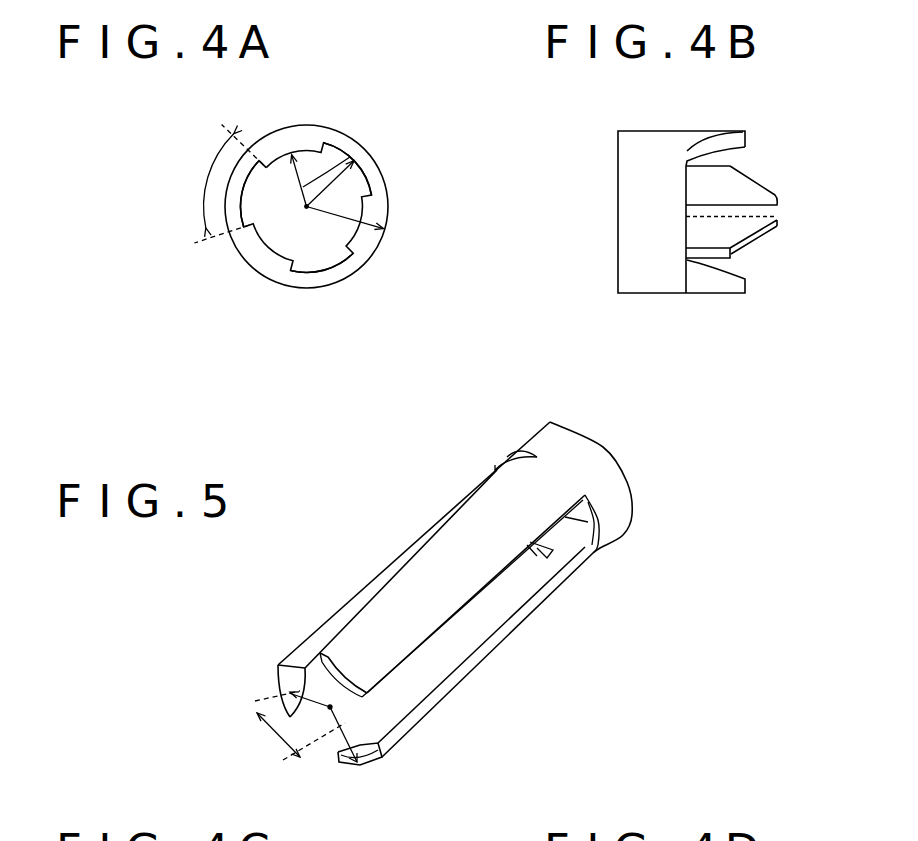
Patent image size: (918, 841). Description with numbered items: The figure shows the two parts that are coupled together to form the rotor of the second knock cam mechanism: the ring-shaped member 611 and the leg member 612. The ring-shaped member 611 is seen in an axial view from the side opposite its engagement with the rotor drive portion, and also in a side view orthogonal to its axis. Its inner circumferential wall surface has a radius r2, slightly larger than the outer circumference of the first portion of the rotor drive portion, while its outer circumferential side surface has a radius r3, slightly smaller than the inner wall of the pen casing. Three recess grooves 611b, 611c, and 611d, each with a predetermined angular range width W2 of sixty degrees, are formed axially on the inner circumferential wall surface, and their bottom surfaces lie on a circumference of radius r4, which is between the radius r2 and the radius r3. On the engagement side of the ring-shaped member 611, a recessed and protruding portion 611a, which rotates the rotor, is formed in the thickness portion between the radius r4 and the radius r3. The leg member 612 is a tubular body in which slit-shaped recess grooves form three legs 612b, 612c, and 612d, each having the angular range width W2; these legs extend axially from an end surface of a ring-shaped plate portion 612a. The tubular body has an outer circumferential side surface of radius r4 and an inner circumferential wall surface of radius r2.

In FIG. 4A, the ring-shaped member 611 is at (257, 257).
In FIG. 4B, the ring-shaped member 611 is at (657, 138).
In FIG. 4B, the recessed and protruding portion 611a is at (752, 243).
In FIG. 4A, the recess groove 611b is at (358, 168).
In FIG. 4A, the recess groove 611c is at (247, 205).
In FIG. 4A, the recess groove 611d is at (313, 267).
In FIG. 5, the leg member 612 is at (467, 617).
In FIG. 5, the ring-shaped plate portion 612a is at (613, 518).
In FIG. 5, the leg 612b is at (393, 603).
In FIG. 5, the leg 612c is at (277, 679).
In FIG. 5, the leg 612d is at (368, 757).
In FIG. 4A, the radius of inner circumferential wall surface r2 is at (330, 155).
In FIG. 5, the radius of inner circumferential wall surface r2 is at (295, 687).
In FIG. 4A, the radius of outer circumferential side surface r3 is at (343, 218).
In FIG. 4A, the radius of recess groove bottom surfaces r4 is at (365, 205).
In FIG. 5, the radius of recess groove bottom surfaces r4 is at (340, 745).
In FIG. 4A, the angular range width W2 is at (215, 184).
In FIG. 5, the angular range width W2 is at (288, 727).